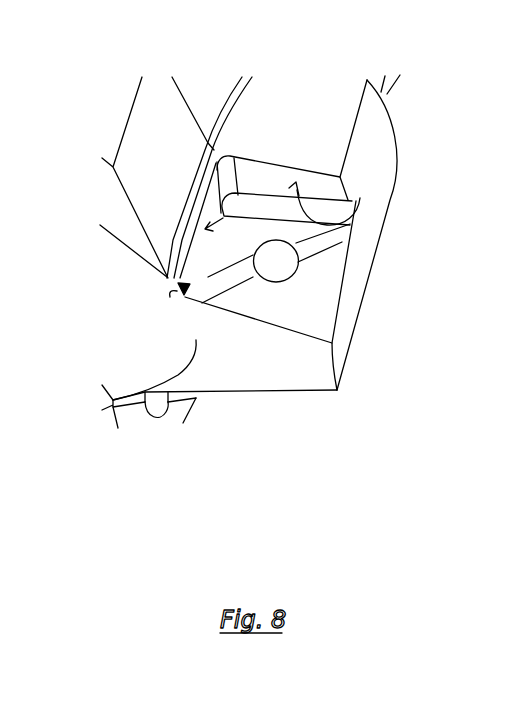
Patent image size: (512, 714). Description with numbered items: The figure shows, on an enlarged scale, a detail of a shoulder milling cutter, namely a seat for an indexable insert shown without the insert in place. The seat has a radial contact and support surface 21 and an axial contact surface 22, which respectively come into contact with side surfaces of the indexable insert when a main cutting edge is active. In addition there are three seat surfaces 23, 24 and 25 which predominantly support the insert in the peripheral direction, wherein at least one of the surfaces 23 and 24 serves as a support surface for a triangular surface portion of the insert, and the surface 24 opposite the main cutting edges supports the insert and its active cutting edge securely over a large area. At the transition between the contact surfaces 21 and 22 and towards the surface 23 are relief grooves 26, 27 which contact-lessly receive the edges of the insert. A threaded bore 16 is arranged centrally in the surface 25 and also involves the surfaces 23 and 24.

The threaded bore 16 is at (284, 262).
The radial contact and support surface 21 is at (168, 278).
The axial contact surface 22 is at (345, 224).
The seat surface 23 is at (256, 230).
The seat surface 24 is at (316, 290).
The seat surface 25 is at (310, 244).
The relief groove 26 is at (327, 183).
The relief groove 27 is at (201, 286).